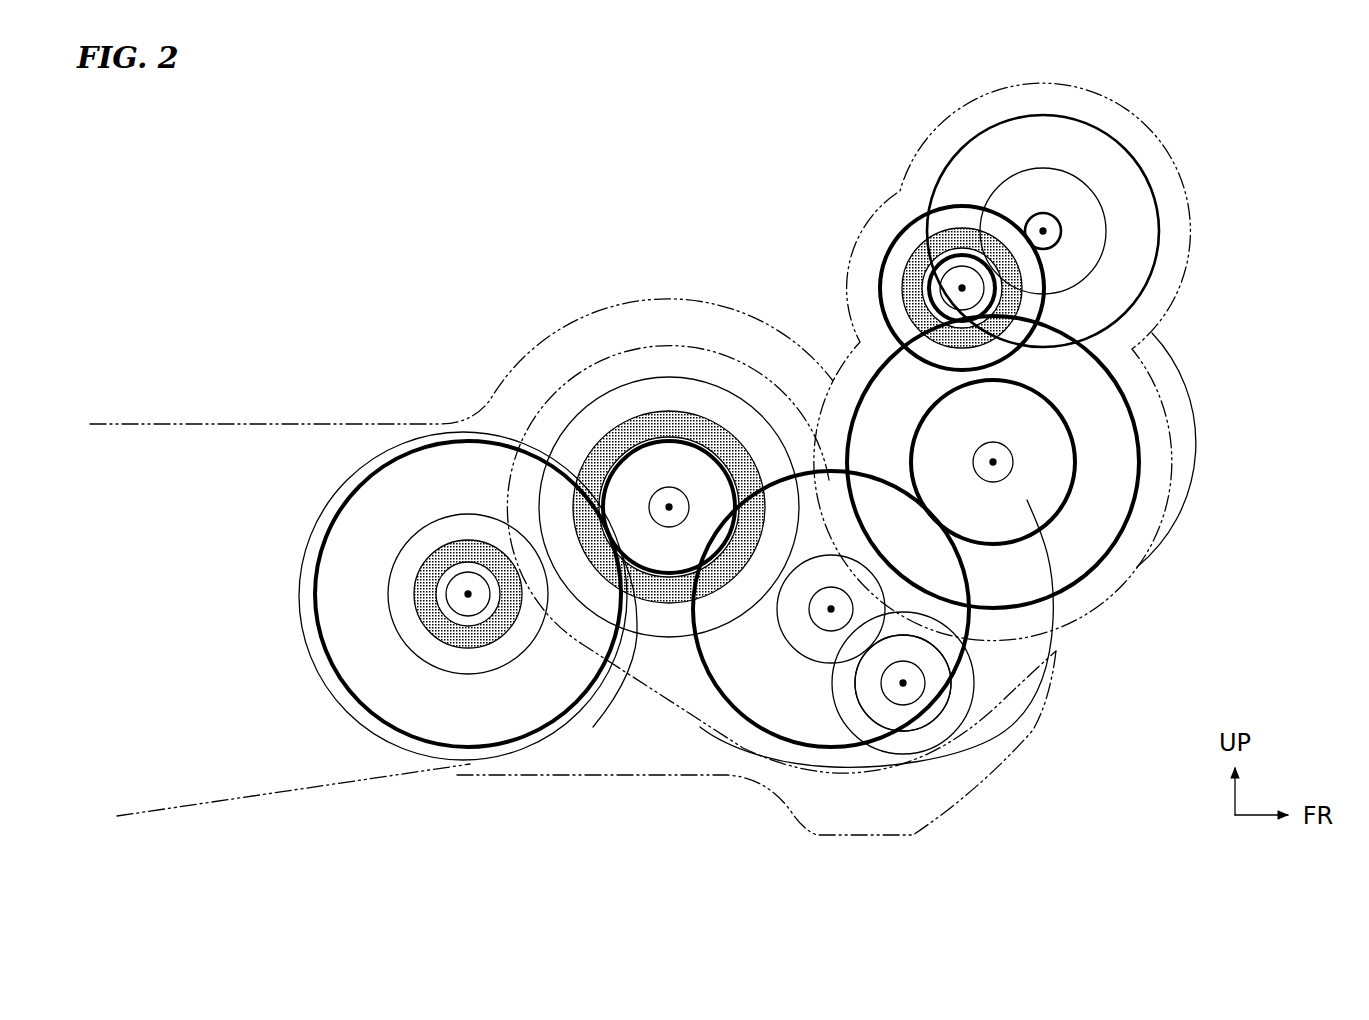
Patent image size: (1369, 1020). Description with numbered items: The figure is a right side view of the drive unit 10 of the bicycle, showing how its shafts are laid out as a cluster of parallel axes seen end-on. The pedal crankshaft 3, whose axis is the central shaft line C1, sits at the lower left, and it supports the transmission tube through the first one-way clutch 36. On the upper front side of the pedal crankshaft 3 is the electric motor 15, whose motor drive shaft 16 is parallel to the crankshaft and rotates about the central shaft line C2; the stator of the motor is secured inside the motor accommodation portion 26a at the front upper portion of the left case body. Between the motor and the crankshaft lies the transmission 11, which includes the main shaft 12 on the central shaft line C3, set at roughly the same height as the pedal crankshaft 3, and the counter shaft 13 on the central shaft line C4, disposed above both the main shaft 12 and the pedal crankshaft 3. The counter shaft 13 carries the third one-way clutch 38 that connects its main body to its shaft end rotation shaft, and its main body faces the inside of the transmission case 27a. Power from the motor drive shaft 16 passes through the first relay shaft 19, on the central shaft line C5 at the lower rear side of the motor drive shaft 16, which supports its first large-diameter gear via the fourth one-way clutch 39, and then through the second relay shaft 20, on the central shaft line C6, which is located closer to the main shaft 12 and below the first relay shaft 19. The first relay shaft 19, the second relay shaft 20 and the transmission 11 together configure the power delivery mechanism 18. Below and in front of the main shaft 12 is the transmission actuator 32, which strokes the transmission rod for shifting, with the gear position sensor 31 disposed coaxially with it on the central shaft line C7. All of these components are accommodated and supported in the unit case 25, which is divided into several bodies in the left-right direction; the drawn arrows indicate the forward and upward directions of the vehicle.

The pedal crankshaft 3 is at (460, 582).
The drive unit 10 is at (1252, 126).
The transmission 11 is at (657, 340).
The main shaft 12 is at (820, 617).
The counter shaft 13 is at (680, 553).
The electric motor 15 is at (1010, 165).
The motor drive shaft 16 is at (1050, 240).
The power delivery mechanism 18 is at (767, 162).
The first relay shaft 19 is at (948, 285).
The second relay shaft 20 is at (878, 383).
The unit case 25 is at (518, 357).
The motor accommodation portion 26a is at (950, 118).
The transmission case 27a is at (845, 772).
The gear position sensor 31 is at (903, 690).
The transmission actuator 32 is at (903, 683).
The first one-way clutch 36 is at (473, 543).
The third one-way clutch 38 is at (635, 425).
The fourth one-way clutch 39 is at (965, 232).
The central shaft line of the pedal crankshaft C1 is at (467, 603).
The central shaft line of the motor drive shaft C2 is at (1055, 233).
The central shaft line of the main shaft C3 is at (831, 609).
The central shaft line of the counter shaft C4 is at (669, 507).
The central shaft line of the first relay shaft C5 is at (962, 288).
The central shaft line of the second relay shaft C6 is at (995, 465).
The central shaft line of the transmission actuator and gear position sensor C7 is at (905, 686).